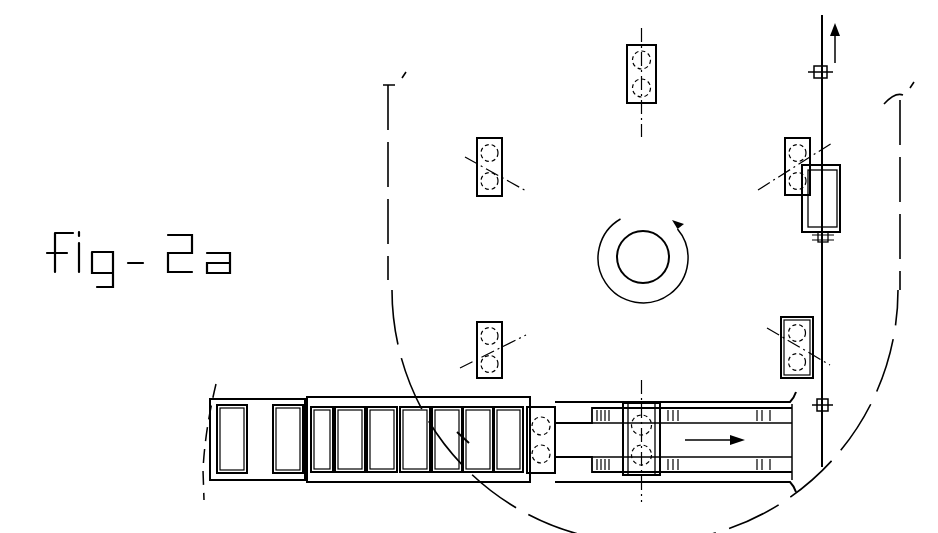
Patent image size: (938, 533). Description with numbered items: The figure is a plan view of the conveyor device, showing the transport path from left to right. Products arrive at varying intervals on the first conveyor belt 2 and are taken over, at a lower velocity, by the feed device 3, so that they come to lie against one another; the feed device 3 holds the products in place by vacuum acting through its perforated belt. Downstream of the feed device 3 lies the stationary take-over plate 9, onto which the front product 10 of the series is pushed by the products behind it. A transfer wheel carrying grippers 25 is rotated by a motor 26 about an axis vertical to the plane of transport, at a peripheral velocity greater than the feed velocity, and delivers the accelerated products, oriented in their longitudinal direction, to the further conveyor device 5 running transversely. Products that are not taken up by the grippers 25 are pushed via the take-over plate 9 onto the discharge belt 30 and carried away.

The first conveyor belt 2 is at (263, 408).
The feed device 3 is at (378, 404).
The further conveyor device 5 is at (823, 283).
The take-over plate 9 is at (566, 403).
The front product 10 is at (539, 408).
The grippers 25 is at (784, 350).
The motor 26 is at (622, 266).
The discharge belt 30 is at (747, 464).